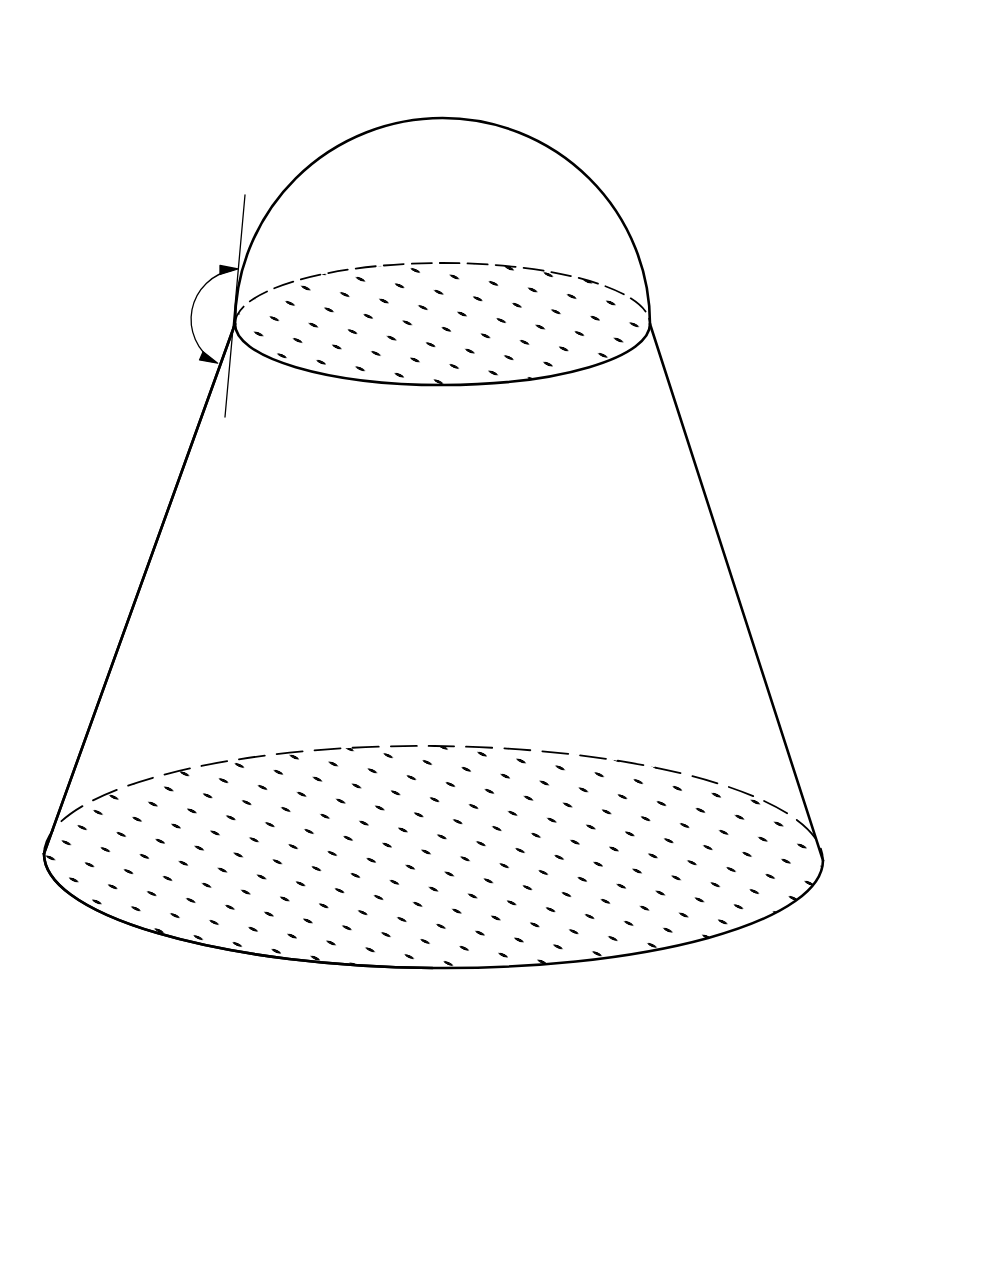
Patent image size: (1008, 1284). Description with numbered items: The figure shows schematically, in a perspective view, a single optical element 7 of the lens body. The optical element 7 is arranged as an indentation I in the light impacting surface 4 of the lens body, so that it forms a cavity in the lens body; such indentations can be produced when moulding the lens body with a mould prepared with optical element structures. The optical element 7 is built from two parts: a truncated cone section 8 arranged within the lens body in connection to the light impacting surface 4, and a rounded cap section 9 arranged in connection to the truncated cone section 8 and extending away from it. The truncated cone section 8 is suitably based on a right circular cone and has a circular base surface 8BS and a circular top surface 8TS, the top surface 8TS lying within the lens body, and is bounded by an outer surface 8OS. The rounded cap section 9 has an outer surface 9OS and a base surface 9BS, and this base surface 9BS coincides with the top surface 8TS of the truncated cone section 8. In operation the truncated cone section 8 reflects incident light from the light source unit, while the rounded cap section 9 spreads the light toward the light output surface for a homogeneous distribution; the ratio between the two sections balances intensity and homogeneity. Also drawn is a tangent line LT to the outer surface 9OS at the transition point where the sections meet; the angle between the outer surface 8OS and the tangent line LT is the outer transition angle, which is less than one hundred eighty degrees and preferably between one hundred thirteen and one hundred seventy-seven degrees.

The optical element 7 is at (710, 260).
The rounded cap section 9 is at (535, 207).
The outer surface of the rounded cap section 9OS is at (378, 104).
The base surface of the rounded cap section 9BS is at (557, 337).
The top surface of the truncated cone section 8TS is at (550, 331).
The truncated cone section 8 is at (690, 615).
The outer surface of the truncated cone section 8OS is at (725, 517).
The base surface of the truncated cone section 8BS is at (570, 867).
The light impacting surface 4 is at (188, 983).
The indentation I is at (198, 572).
The tangent line LT is at (240, 223).